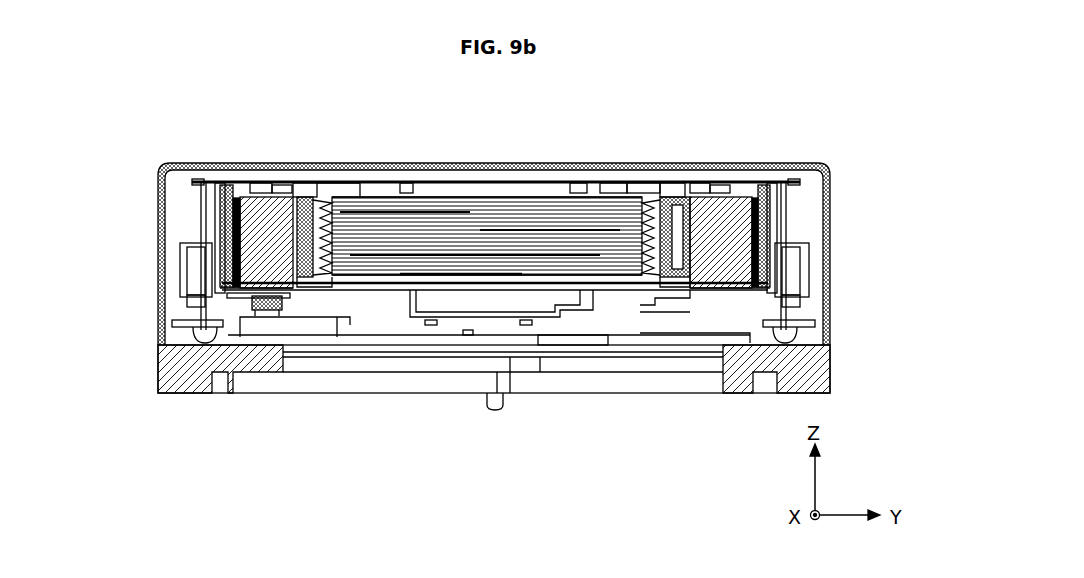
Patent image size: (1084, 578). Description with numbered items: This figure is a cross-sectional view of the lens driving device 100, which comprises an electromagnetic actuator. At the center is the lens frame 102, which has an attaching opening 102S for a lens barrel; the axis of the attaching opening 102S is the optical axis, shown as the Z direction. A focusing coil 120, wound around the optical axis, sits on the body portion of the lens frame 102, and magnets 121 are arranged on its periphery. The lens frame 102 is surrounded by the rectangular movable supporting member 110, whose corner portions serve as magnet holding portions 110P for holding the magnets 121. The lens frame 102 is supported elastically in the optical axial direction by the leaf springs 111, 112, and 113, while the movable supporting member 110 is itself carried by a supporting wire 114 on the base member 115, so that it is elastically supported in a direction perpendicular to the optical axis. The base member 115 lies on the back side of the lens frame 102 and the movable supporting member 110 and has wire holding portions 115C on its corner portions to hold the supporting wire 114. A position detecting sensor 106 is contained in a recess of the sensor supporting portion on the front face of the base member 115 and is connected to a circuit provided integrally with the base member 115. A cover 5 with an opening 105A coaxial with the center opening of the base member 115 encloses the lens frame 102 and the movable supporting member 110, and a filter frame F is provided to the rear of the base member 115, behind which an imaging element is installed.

The cover 5 is at (832, 210).
The lens driving device 100 is at (792, 116).
The lens frame 102 is at (337, 185).
The attaching opening 102S is at (362, 186).
The opening 105A is at (665, 185).
The position detecting sensor 106 is at (262, 300).
The movable supporting member 110 is at (205, 240).
The magnet holding portion 110P is at (733, 182).
The leaf spring 111 is at (517, 192).
The leaf spring 112 is at (266, 240).
The leaf spring 113 is at (403, 350).
The supporting wire 114 is at (196, 180).
The base member 115 is at (633, 298).
The wire holding portion 115C is at (185, 290).
The focusing coil 120 is at (300, 193).
The magnet 121 is at (252, 190).
The filter frame F is at (833, 371).